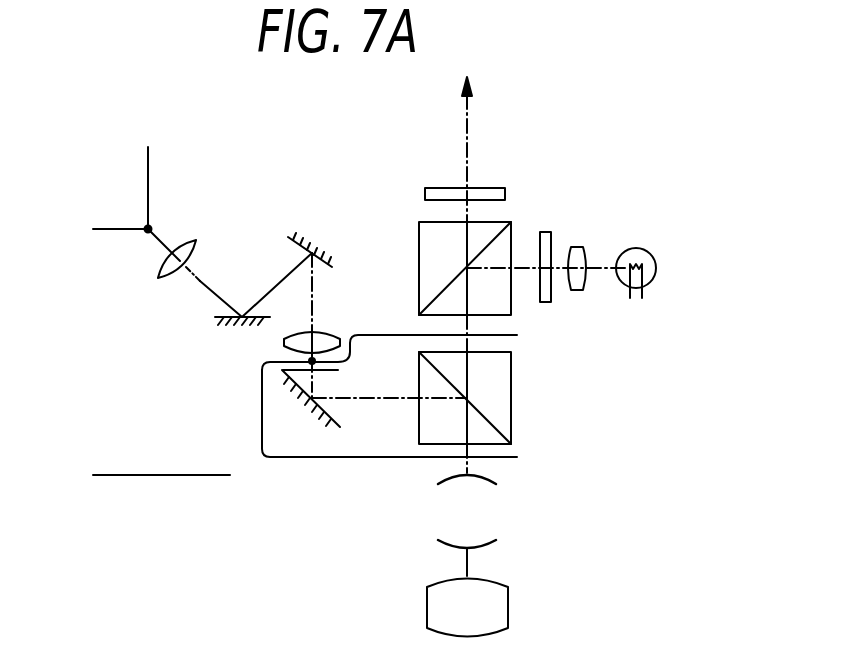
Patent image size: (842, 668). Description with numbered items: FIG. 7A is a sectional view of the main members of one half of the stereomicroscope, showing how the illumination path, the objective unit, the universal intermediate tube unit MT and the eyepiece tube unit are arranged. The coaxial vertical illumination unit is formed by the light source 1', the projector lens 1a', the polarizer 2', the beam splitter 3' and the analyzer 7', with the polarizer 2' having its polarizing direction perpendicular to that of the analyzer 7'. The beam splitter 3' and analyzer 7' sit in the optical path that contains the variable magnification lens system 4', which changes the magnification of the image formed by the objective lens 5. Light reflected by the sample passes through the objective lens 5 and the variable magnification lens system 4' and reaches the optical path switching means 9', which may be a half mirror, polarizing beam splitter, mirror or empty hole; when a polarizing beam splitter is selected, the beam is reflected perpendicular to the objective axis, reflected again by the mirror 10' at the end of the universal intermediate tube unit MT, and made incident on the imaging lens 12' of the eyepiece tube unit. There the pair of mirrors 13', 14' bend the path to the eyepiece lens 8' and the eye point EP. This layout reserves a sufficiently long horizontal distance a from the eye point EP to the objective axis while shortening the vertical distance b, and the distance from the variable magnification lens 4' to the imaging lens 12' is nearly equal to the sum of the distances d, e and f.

The light source 1' is at (651, 234).
The projector lens 1a' is at (600, 238).
The polarizer 2' is at (564, 238).
The beam splitter 3' is at (487, 241).
The variable magnification lens system 4' is at (509, 492).
The objective lens 5 is at (508, 597).
The analyzer 7' is at (484, 163).
The eyepiece lens 8' is at (178, 232).
The optical path switching means 9' is at (510, 398).
The mirror 10' is at (327, 440).
The imaging lens 12' is at (334, 318).
The mirror 13' is at (345, 254).
The mirror 14' is at (211, 324).
The universal intermediate tube unit MT is at (262, 439).
The eye point EP is at (146, 228).
The horizontal distance a is at (467, 162).
The vertical distance b is at (117, 229).
The distance d is at (312, 362).
The distance e is at (466, 399).
The distance f is at (465, 473).